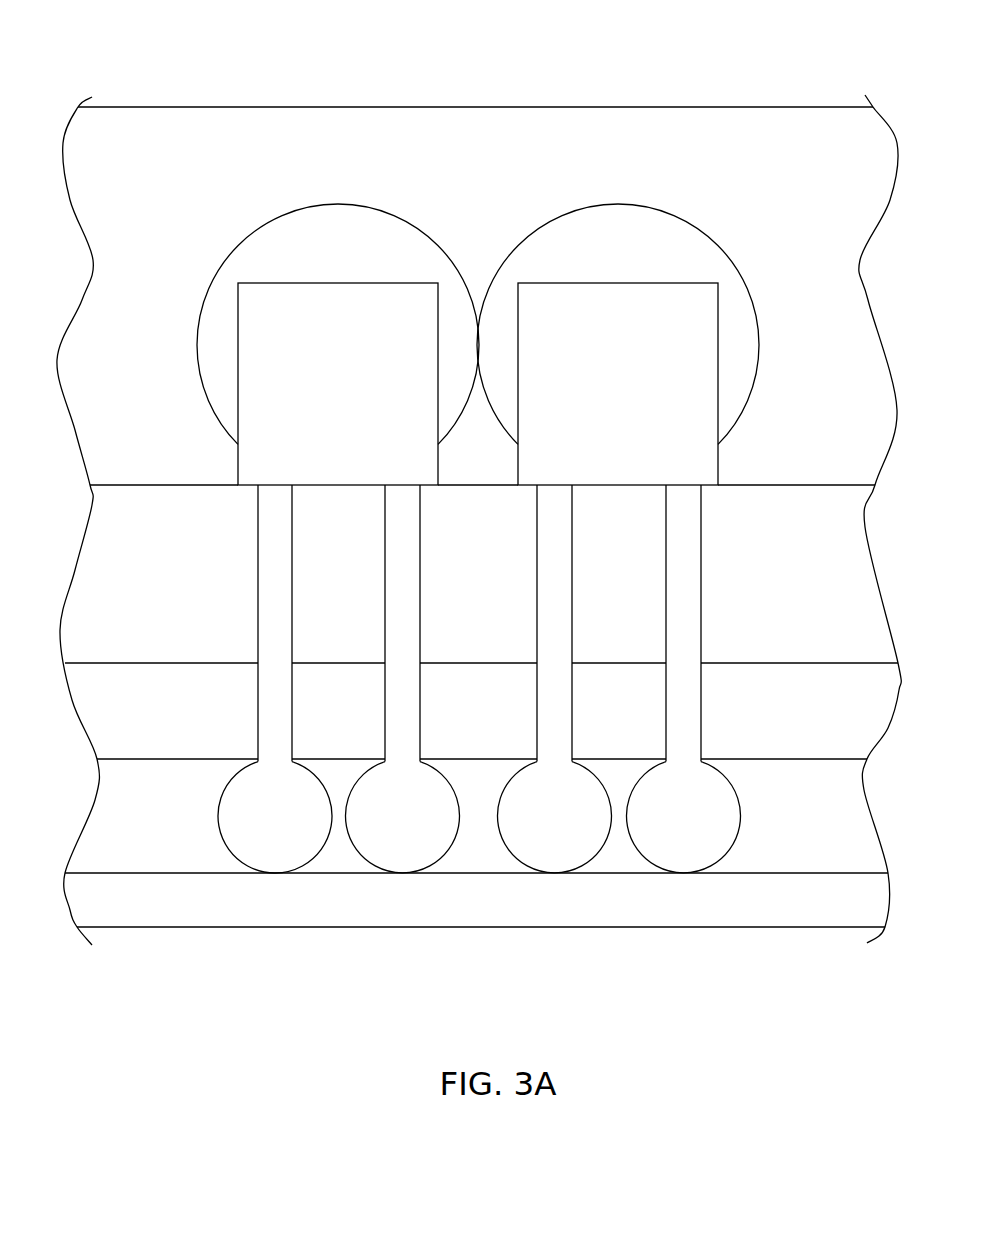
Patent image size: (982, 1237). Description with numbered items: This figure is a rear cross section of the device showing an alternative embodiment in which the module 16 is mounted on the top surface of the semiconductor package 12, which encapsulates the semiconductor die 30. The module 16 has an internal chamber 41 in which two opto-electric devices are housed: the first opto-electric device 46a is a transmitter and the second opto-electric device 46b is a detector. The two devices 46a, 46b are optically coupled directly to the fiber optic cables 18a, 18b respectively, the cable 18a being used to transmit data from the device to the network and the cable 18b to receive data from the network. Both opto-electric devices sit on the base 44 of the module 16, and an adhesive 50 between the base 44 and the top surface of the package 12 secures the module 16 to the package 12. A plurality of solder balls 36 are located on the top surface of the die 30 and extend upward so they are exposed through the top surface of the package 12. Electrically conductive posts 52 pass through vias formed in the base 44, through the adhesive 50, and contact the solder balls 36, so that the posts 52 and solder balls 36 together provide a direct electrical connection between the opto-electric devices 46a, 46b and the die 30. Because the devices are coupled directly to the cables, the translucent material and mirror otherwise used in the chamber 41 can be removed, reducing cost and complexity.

The module 16 is at (495, 97).
The internal chamber 41 is at (482, 337).
The fiber optic cable 18a is at (365, 202).
The fiber optic cable 18b is at (643, 203).
The first opto-electric device 46a is at (338, 384).
The second opto-electric device 46b is at (618, 384).
The base 44 is at (481, 622).
The electrically conductive posts 52 is at (258, 583).
The adhesive 50 is at (482, 732).
The solder balls 36 is at (479, 817).
The semiconductor package 12 is at (476, 839).
The semiconductor die 30 is at (481, 909).